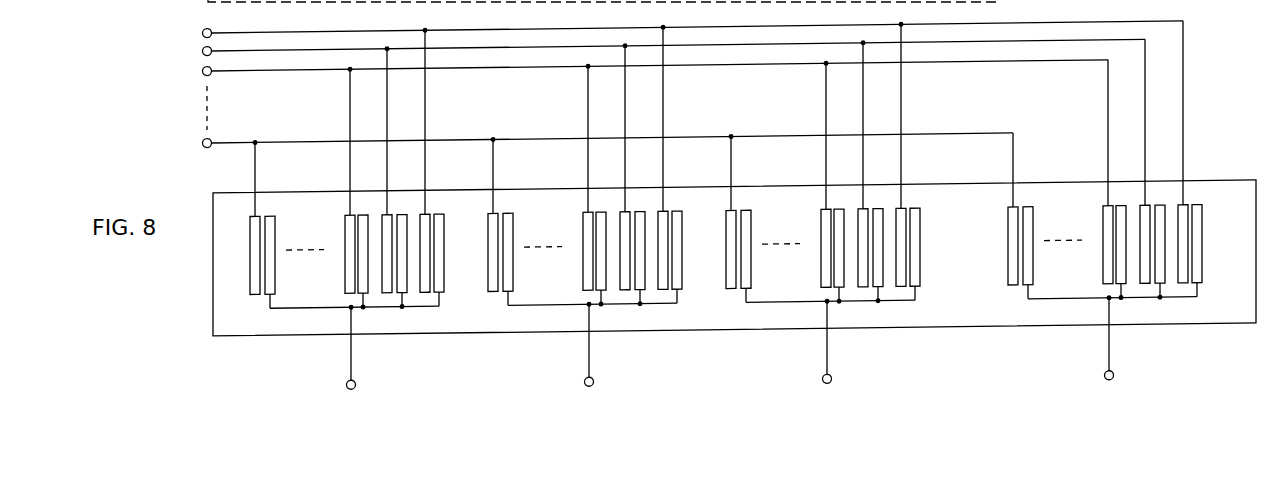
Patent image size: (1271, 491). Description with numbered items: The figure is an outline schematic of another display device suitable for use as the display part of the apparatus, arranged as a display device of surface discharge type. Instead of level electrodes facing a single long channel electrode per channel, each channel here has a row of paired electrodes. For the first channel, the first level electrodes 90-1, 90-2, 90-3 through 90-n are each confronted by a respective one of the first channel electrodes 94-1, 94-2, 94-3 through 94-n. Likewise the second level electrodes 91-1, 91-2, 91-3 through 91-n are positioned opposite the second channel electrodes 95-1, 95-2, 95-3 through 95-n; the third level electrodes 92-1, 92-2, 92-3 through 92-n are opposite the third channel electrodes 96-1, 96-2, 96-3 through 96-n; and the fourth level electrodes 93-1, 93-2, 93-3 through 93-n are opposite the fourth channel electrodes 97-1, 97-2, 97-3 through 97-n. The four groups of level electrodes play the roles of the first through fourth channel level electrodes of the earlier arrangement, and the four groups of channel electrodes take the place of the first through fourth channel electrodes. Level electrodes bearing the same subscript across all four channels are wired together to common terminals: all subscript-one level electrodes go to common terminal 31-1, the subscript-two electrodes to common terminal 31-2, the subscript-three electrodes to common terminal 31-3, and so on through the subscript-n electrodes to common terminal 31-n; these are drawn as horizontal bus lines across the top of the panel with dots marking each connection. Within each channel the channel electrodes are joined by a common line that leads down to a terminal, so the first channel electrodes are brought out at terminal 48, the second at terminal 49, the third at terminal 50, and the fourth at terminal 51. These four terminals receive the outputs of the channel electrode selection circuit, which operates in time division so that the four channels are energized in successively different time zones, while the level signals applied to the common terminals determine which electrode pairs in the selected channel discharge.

The common terminal 31-1 is at (203, 32).
The common terminal 31-2 is at (203, 52).
The common terminal 31-3 is at (203, 72).
The common terminal 31-n is at (203, 141).
The first level electrode 90-1 is at (427, 216).
The first level electrode 90-2 is at (388, 216).
The first level electrode 90-3 is at (349, 216).
The first level electrode 90-n is at (262, 217).
The second level electrode 91-1 is at (667, 217).
The second level electrode 91-2 is at (626, 217).
The second level electrode 91-3 is at (585, 217).
The second level electrode 91-n is at (497, 217).
The third level electrode 92-1 is at (903, 217).
The third level electrode 92-2 is at (865, 217).
The third level electrode 92-3 is at (824, 217).
The third level electrode 92-n is at (736, 217).
The fourth level electrode 93-1 is at (1186, 217).
The fourth level electrode 93-2 is at (1146, 217).
The fourth level electrode 93-3 is at (1108, 217).
The fourth level electrode 93-n is at (1020, 217).
The first channel electrode 94-1 is at (445, 282).
The first channel electrode 94-2 is at (408, 283).
The first channel electrode 94-3 is at (369, 290).
The first channel electrode 94-n is at (276, 246).
The second channel electrode 95-1 is at (683, 285).
The second channel electrode 95-2 is at (646, 288).
The second channel electrode 95-3 is at (607, 287).
The second channel electrode 95-n is at (514, 247).
The third channel electrode 96-1 is at (922, 285).
The third channel electrode 96-2 is at (885, 288).
The third channel electrode 96-3 is at (846, 290).
The third channel electrode 96-n is at (753, 247).
The fourth channel electrode 97-1 is at (1202, 282).
The fourth channel electrode 97-2 is at (1165, 288).
The fourth channel electrode 97-3 is at (1126, 288).
The fourth channel electrode 97-n is at (1034, 247).
The terminal 48 is at (347, 384).
The terminal 49 is at (585, 385).
The terminal 50 is at (824, 384).
The terminal 51 is at (1106, 384).